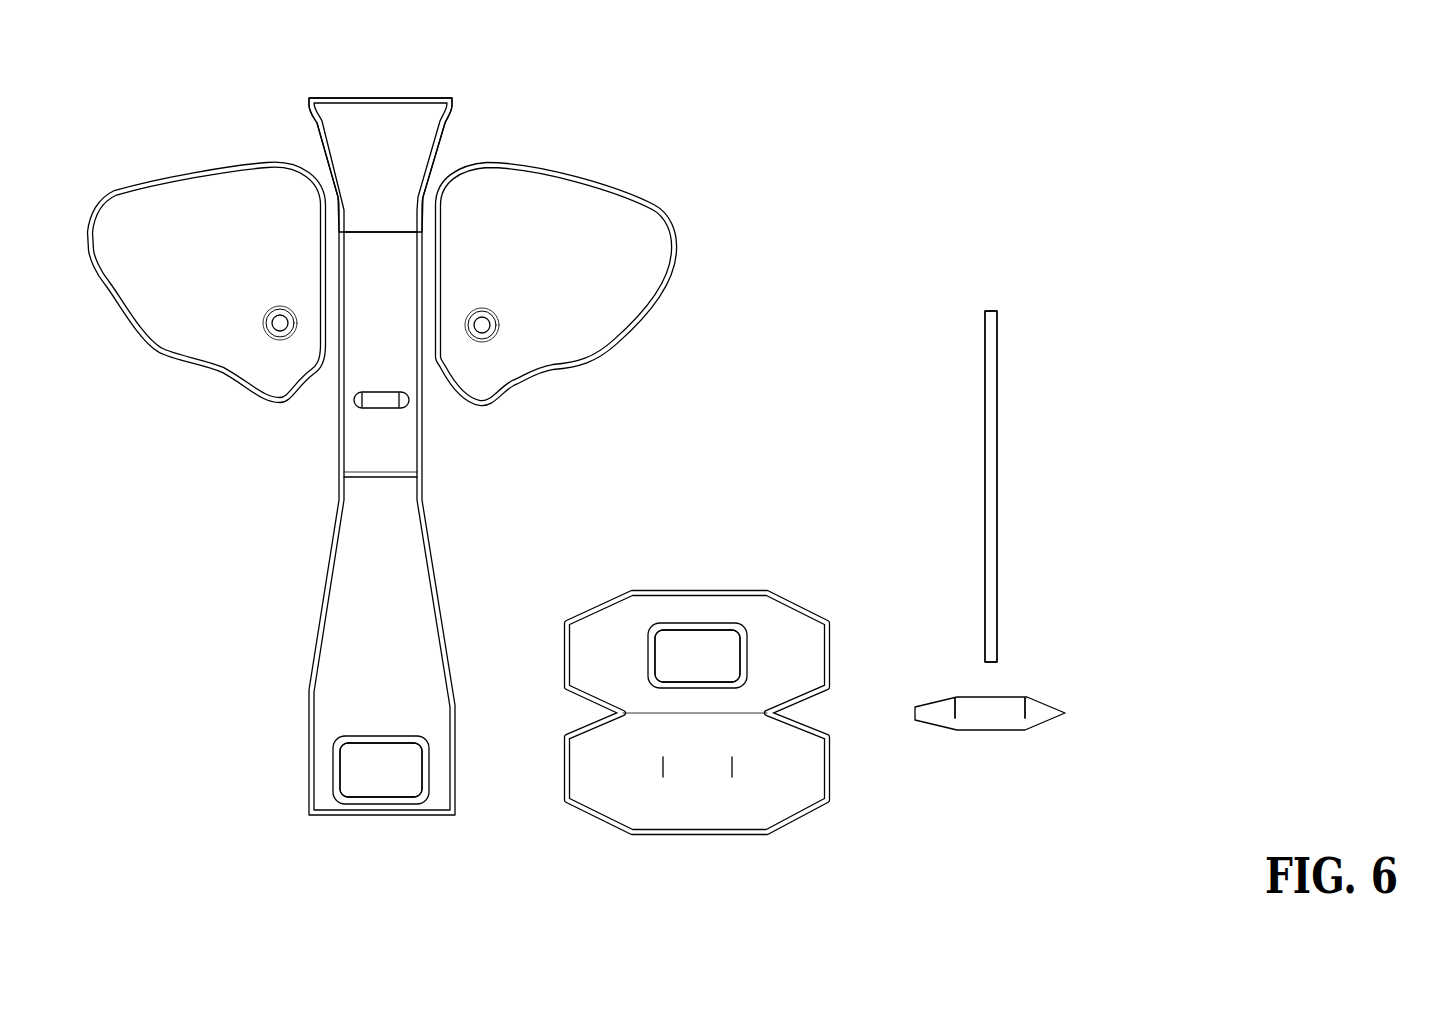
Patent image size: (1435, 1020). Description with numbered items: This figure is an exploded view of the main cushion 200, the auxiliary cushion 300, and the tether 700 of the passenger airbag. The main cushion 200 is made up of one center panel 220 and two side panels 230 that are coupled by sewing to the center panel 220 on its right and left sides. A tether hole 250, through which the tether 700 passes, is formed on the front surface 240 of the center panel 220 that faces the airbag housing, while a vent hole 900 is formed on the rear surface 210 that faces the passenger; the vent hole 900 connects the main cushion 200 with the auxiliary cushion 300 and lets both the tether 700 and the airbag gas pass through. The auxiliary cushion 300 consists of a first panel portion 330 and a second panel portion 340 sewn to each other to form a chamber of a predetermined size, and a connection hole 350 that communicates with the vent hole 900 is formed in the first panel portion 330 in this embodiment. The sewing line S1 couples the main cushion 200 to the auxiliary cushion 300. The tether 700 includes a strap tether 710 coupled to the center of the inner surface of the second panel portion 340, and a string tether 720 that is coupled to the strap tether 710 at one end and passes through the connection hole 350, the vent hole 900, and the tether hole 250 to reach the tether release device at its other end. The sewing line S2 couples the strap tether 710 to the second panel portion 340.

The main cushion 200 is at (492, 137).
The rear surface 210 is at (352, 700).
The center panel 220 is at (372, 118).
The side panel 230 is at (172, 207).
The front surface 240 is at (355, 349).
The tether hole 250 is at (380, 408).
The auxiliary cushion 300 is at (632, 584).
The first panel portion 330 is at (793, 633).
The second panel portion 340 is at (777, 800).
The connection hole 350 is at (691, 657).
The tether 700 is at (1000, 575).
The strap tether 710 is at (988, 718).
The string tether 720 is at (990, 468).
The vent hole 900 is at (365, 768).
The sewing line S1 is at (340, 800).
The sewing line S2 is at (663, 767).